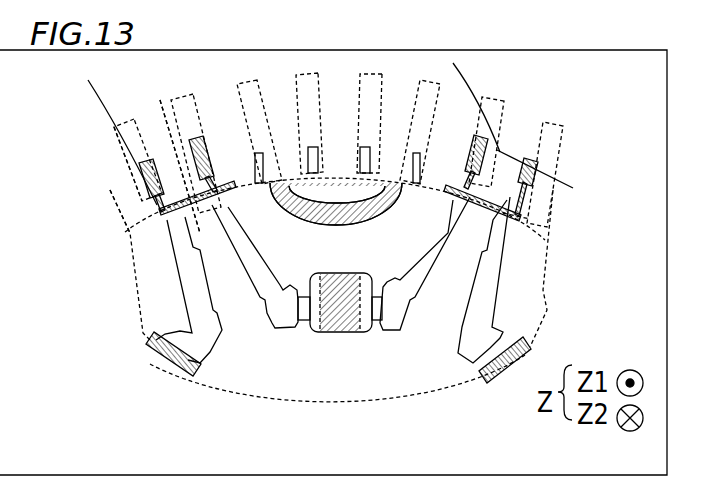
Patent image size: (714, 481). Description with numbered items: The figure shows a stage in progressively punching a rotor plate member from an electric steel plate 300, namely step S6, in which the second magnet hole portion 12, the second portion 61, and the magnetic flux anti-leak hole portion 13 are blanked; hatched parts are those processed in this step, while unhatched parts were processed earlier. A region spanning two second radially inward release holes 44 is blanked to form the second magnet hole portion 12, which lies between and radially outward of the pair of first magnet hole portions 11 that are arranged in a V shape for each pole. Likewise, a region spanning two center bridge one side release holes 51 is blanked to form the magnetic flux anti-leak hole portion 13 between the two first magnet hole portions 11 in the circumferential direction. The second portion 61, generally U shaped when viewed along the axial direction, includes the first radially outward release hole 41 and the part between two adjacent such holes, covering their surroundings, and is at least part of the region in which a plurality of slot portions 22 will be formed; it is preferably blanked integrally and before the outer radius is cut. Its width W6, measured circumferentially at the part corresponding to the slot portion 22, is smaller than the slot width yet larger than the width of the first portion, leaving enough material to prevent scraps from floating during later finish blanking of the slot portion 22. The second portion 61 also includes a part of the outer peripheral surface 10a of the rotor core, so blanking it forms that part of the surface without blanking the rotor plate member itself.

The outer peripheral surface 10a is at (156, 148).
The first magnet hole portion 11 is at (167, 250).
The second magnet hole portion 12 is at (337, 197).
The magnetic flux anti-leak hole portion 13 is at (340, 333).
The slot portion 22 is at (117, 124).
The first radially outward release hole 41 is at (140, 176).
The second radially inward release hole 44 is at (260, 152).
The center bridge one side release hole 51 is at (153, 358).
The second portion 61 is at (275, 127).
The electric steel plate 300 is at (163, 317).
The width W6 is at (545, 169).
The step S6 is at (352, 460).